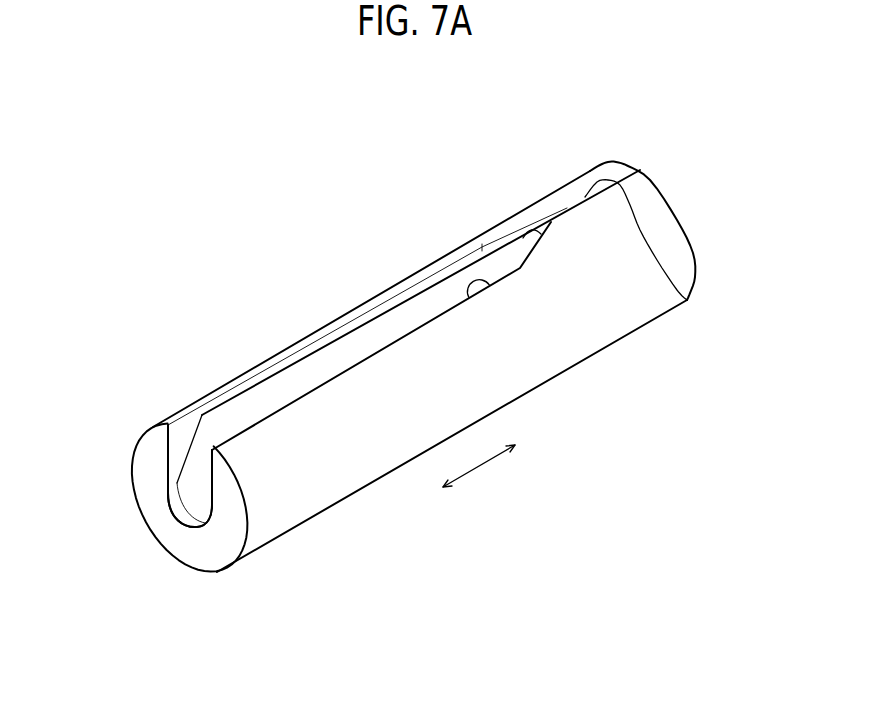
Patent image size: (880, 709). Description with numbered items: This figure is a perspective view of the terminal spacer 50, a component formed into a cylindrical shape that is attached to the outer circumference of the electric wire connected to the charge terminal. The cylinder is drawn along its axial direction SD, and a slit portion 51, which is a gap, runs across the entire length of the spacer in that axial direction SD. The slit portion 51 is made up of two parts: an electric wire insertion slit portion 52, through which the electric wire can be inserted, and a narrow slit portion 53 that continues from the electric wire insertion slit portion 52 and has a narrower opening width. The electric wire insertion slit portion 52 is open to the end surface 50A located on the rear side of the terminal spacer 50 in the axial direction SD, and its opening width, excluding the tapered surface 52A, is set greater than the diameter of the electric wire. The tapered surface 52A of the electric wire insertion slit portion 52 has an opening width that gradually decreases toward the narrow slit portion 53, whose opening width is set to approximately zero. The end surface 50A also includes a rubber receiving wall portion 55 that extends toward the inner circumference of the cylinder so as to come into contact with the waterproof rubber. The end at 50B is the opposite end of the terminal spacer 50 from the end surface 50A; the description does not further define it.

The terminal spacer 50 is at (403, 214).
The end surface 50A is at (158, 470).
The second end portion 50B is at (683, 201).
The slit portion 51 is at (318, 366).
The electric wire insertion slit portion 52 is at (492, 284).
The tapered surface 52A is at (544, 238).
The narrow slit portion 53 is at (686, 300).
The rubber receiving wall portion 55 is at (182, 535).
The axial direction SD is at (479, 471).